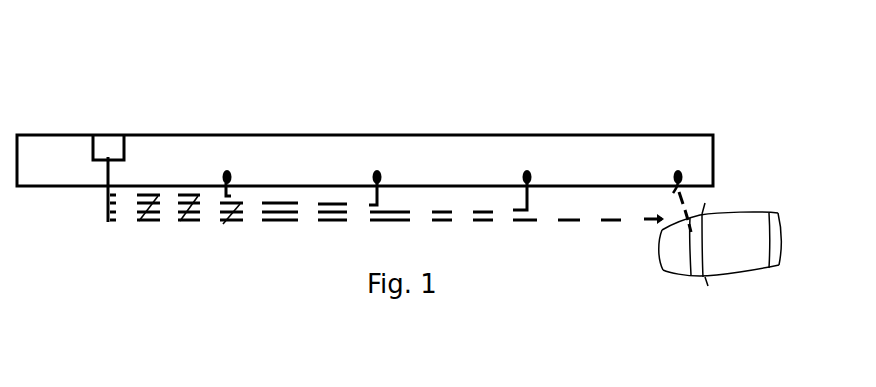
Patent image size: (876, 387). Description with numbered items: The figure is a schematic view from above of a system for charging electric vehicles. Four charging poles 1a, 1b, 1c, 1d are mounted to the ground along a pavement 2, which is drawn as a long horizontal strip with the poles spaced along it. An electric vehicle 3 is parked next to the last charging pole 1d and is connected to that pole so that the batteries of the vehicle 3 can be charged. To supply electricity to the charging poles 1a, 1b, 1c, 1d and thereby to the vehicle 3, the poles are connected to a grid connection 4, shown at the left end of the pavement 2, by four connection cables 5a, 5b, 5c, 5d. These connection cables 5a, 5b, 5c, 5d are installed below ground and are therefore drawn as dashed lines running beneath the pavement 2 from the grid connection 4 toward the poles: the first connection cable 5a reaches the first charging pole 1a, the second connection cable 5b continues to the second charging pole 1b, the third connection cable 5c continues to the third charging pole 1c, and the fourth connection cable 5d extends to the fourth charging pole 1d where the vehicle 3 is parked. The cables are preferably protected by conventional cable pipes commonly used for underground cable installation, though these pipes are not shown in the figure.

The charging pole 1a is at (227, 170).
The charging pole 1b is at (377, 170).
The charging pole 1c is at (527, 170).
The charging pole 1d is at (678, 170).
The pavement 2 is at (305, 135).
The electric vehicle 3 is at (731, 268).
The grid connection 4 is at (93, 148).
The connection cable 5a is at (135, 226).
The connection cable 5b is at (177, 227).
The connection cable 5c is at (226, 225).
The connection cable 5d is at (278, 224).